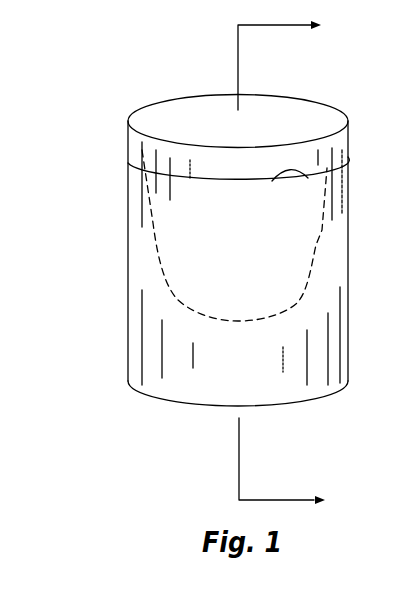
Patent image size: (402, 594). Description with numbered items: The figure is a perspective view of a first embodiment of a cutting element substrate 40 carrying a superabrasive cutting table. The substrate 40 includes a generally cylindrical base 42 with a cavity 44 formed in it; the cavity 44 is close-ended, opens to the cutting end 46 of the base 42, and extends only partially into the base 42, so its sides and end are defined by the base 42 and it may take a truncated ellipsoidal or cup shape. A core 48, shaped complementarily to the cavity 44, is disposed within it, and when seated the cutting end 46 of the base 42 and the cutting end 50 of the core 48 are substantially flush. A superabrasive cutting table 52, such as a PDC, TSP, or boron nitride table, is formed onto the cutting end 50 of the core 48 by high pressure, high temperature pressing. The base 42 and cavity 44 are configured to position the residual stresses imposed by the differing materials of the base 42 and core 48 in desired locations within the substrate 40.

The substrate 40 is at (80, 62).
The base 42 is at (150, 273).
The cavity 44 is at (160, 250).
The cutting end 46 is at (153, 175).
The core 48 is at (173, 228).
The cutting end 50 is at (305, 175).
The superabrasive cutting table 52 is at (285, 110).